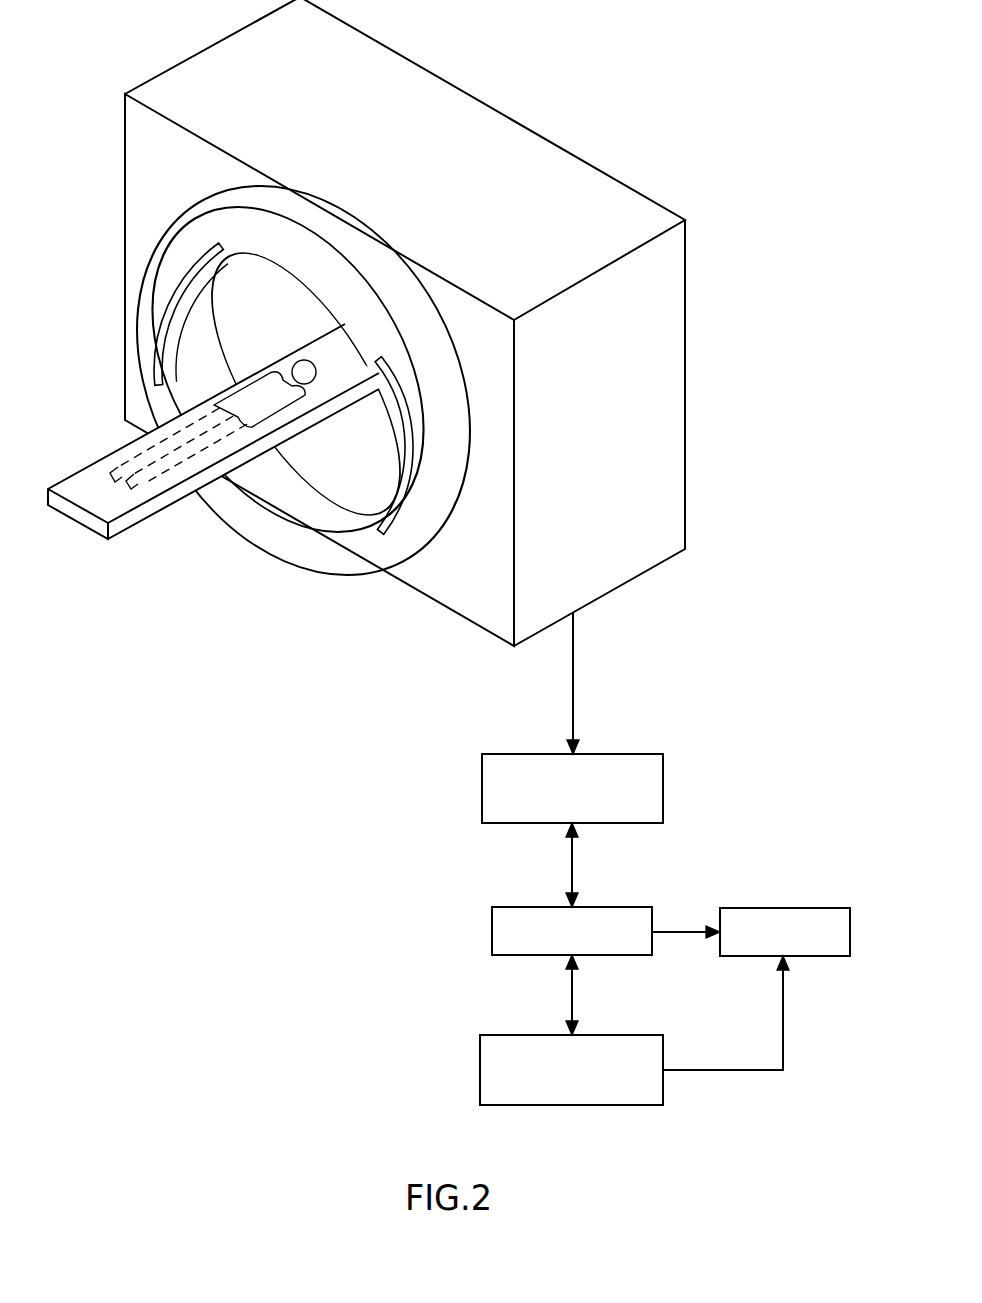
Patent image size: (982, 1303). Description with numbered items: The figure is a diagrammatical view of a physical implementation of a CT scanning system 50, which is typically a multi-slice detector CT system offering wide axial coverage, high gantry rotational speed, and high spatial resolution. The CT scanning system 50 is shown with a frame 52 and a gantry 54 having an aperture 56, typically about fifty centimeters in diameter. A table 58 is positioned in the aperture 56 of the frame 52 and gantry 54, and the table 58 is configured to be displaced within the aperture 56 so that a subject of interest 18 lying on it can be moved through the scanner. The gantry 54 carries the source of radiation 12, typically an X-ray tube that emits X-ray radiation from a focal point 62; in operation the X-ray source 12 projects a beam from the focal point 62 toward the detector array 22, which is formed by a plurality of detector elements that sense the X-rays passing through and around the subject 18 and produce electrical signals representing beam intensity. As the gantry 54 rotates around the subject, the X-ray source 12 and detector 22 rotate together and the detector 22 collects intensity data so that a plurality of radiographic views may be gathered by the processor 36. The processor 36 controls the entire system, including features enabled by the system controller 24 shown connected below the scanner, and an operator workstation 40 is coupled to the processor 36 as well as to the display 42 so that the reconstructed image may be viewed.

The source of radiation 12 is at (158, 342).
The subject of interest 18 is at (128, 453).
The detector array 22 is at (403, 500).
The system controller 24 is at (481, 791).
The processor 36 is at (492, 934).
The operator workstation 40 is at (480, 1071).
The display 42 is at (787, 907).
The CT scanning system 50 is at (432, 323).
The frame 52 is at (685, 383).
The gantry 54 is at (303, 569).
The aperture 56 is at (287, 302).
The table 58 is at (98, 530).
The focal point 62 is at (196, 304).